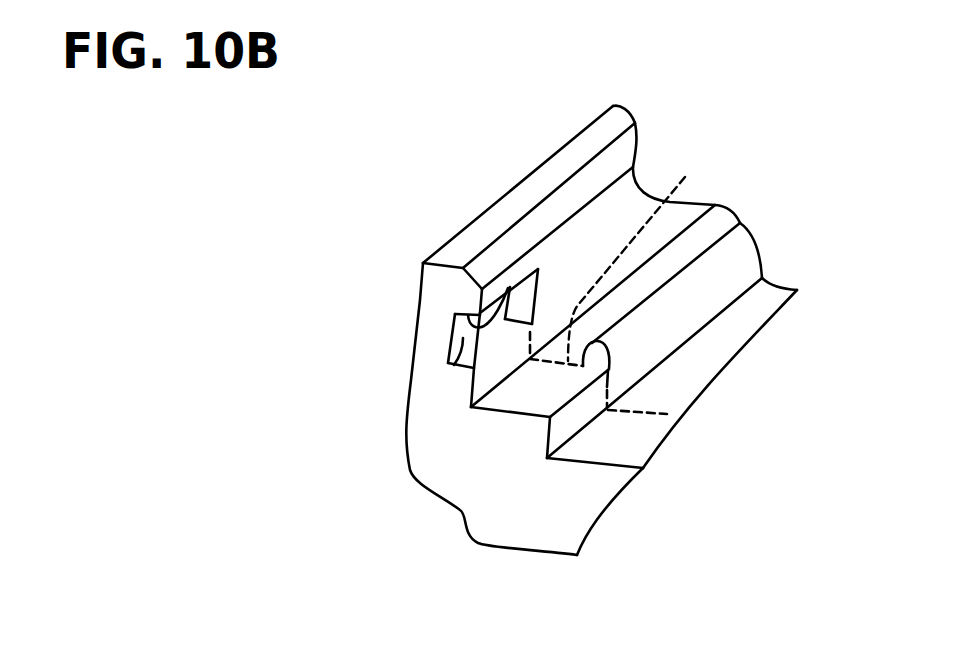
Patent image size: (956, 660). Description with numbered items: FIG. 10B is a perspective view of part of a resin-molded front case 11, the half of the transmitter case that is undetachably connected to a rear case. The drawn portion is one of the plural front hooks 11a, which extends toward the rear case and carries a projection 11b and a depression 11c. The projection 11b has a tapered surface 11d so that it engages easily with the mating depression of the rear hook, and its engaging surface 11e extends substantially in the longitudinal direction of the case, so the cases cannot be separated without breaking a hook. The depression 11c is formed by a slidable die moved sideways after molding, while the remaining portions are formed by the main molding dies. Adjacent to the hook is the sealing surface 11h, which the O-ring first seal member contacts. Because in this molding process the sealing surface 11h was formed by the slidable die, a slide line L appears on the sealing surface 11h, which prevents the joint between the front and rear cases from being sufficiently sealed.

The front case 11 is at (405, 448).
The front hook 11a is at (430, 343).
The projection 11b is at (465, 296).
The depression 11c is at (462, 363).
The tapered surface 11d is at (487, 266).
The engaging surface 11e is at (509, 287).
The sealing surface 11h is at (530, 398).
The slide line L is at (637, 256).